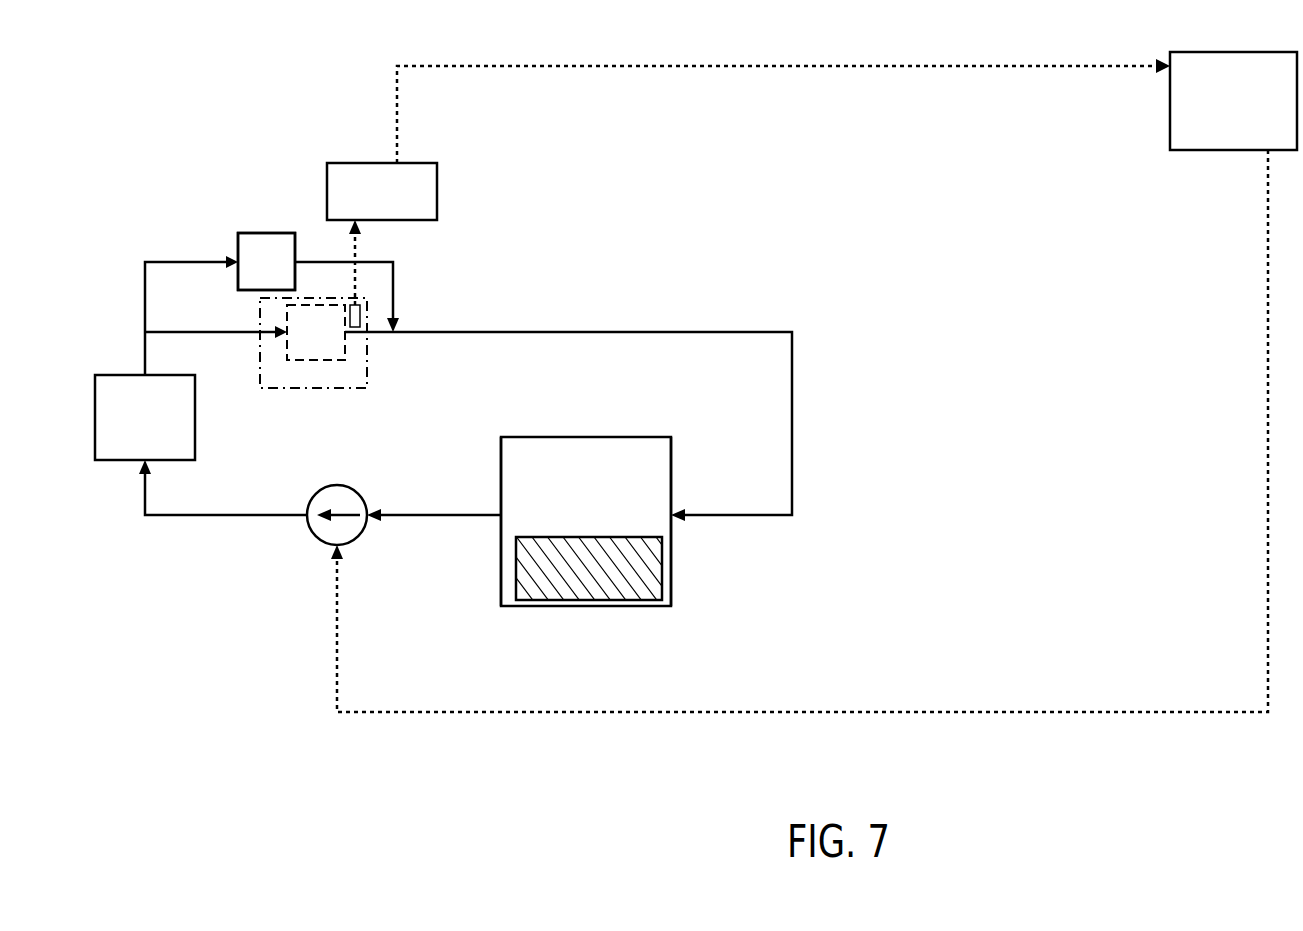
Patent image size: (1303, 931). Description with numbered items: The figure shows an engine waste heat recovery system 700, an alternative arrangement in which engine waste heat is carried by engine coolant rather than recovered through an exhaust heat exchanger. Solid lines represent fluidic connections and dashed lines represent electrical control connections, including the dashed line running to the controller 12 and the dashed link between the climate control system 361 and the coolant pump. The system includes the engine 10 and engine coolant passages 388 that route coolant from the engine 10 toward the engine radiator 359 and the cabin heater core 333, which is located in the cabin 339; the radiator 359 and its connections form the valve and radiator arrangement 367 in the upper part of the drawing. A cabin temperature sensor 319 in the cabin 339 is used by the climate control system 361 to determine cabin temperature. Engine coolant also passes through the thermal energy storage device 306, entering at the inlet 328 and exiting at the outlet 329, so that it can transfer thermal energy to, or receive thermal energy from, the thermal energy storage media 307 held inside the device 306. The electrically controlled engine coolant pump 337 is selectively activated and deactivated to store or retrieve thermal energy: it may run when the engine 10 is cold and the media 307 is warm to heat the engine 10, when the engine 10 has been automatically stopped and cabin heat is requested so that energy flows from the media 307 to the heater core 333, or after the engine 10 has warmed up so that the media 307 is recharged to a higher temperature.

The engine waste heat recovery system 700 is at (338, 60).
The controller 12 is at (814, 382).
The climate control system 361 is at (402, 204).
The valve assembly 367 is at (246, 183).
The engine radiator 359 is at (266, 261).
The engine coolant passages 388 is at (143, 278).
The cabin temperature sensor 319 is at (353, 303).
The cabin heater core 333 is at (336, 345).
The cabin 339 is at (357, 387).
The engine 10 is at (158, 429).
The electrically controlled engine coolant pump 337 is at (318, 533).
The thermal energy storage device 306 is at (607, 534).
The thermal energy storage media 307 is at (609, 580).
The outlet 329 is at (498, 517).
The inlet 328 is at (677, 515).